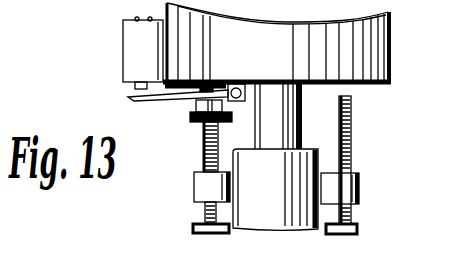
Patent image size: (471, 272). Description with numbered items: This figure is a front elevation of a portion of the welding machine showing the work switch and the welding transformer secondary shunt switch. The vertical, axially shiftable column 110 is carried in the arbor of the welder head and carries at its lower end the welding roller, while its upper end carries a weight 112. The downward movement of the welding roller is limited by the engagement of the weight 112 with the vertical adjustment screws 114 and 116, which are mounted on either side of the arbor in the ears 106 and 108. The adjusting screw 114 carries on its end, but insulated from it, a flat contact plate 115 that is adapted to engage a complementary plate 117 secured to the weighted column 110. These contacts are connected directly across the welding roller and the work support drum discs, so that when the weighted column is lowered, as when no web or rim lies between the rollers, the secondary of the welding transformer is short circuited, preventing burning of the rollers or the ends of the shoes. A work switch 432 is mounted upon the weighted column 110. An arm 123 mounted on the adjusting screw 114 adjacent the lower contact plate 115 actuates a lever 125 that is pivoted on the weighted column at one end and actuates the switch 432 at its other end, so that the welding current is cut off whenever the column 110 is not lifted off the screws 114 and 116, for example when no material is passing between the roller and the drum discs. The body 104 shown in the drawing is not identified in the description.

The block body 104 is at (275, 189).
The ear 106 is at (205, 188).
The ear 108 is at (352, 186).
The column 110 is at (288, 120).
The weight 112 is at (390, 60).
The adjusting screw 114 is at (200, 208).
The flat contact plate 115 is at (194, 112).
The adjustment screw 116 is at (348, 127).
The complementary plate 117 is at (212, 84).
The arm 123 is at (196, 124).
The lever 125 is at (136, 100).
The work switch 432 is at (137, 55).